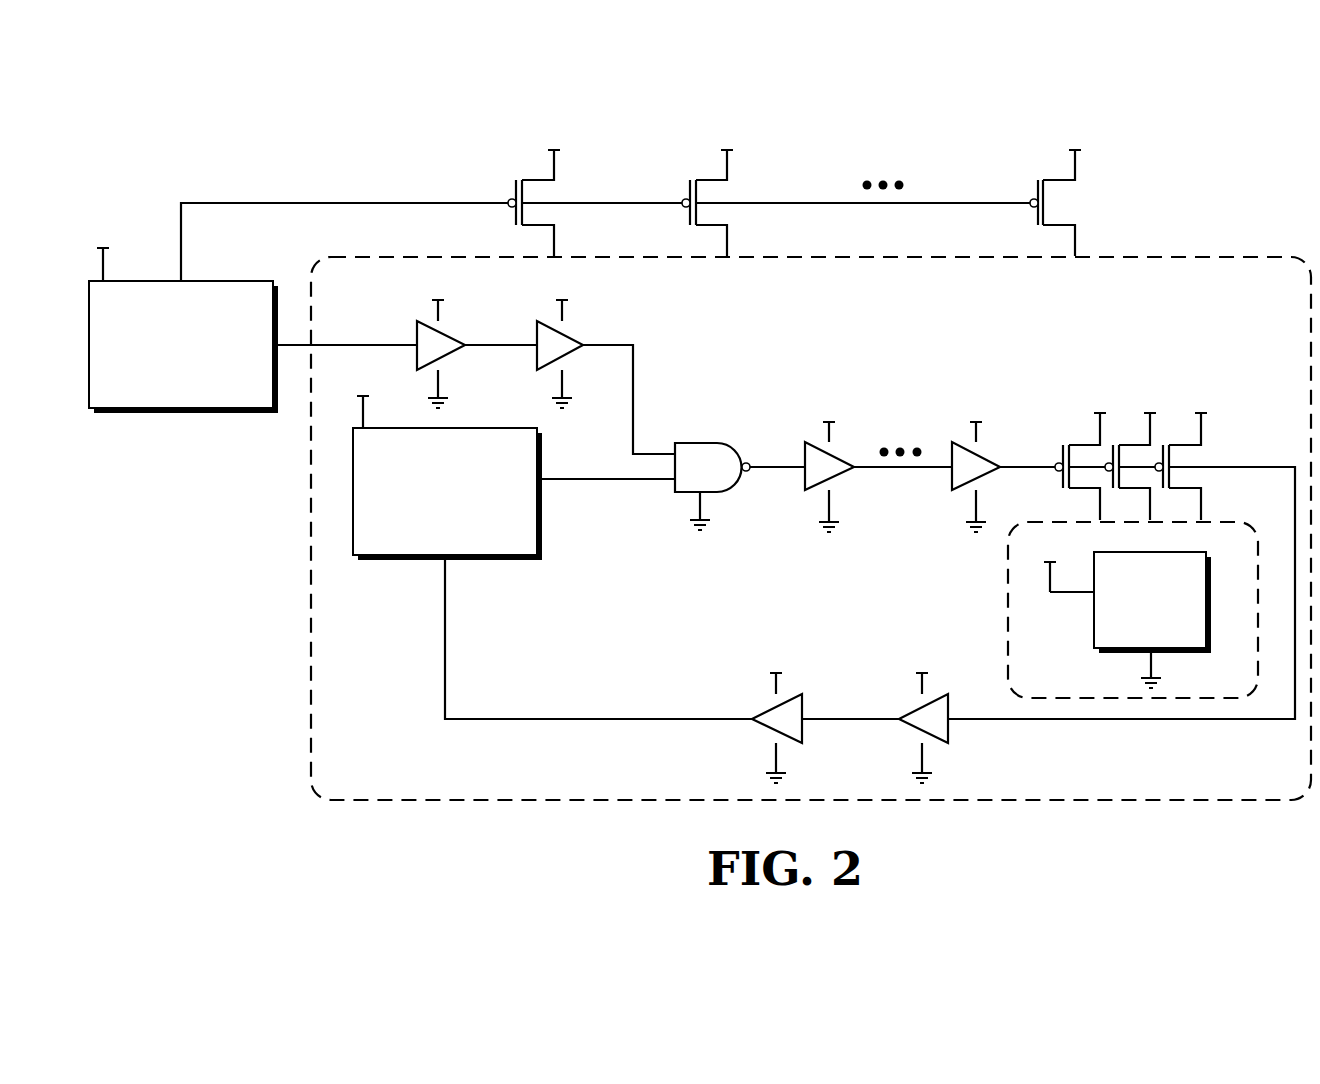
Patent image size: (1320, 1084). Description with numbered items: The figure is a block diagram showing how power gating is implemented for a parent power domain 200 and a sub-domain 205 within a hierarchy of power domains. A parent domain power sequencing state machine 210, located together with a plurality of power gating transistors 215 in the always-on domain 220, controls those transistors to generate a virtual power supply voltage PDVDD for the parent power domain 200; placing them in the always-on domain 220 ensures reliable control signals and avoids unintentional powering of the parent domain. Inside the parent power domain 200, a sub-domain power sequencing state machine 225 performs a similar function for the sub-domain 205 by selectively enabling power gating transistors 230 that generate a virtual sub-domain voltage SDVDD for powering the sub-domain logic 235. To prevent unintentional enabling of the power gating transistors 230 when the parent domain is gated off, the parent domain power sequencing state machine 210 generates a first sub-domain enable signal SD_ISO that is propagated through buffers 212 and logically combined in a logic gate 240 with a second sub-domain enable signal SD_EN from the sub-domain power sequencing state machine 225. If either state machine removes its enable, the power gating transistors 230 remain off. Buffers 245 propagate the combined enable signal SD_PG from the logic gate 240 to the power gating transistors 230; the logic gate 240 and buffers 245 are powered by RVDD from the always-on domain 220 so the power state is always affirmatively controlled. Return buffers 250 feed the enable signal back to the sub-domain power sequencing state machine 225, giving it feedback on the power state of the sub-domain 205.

The parent power domain 200 is at (811, 528).
The sub-domain 205 is at (1133, 610).
The parent domain power sequencing state machine 210 is at (294, 297).
The buffers 212 is at (417, 330).
The power gating transistors 215 is at (514, 182).
The always-on domain 220 is at (203, 840).
The sub-domain power sequencing state machine 225 is at (543, 546).
The power gating transistors 230 is at (1062, 447).
The sub-domain logic 235 is at (1152, 620).
The logic gate 240 is at (675, 488).
The buffers 245 is at (805, 485).
The return buffers 250 is at (800, 728).